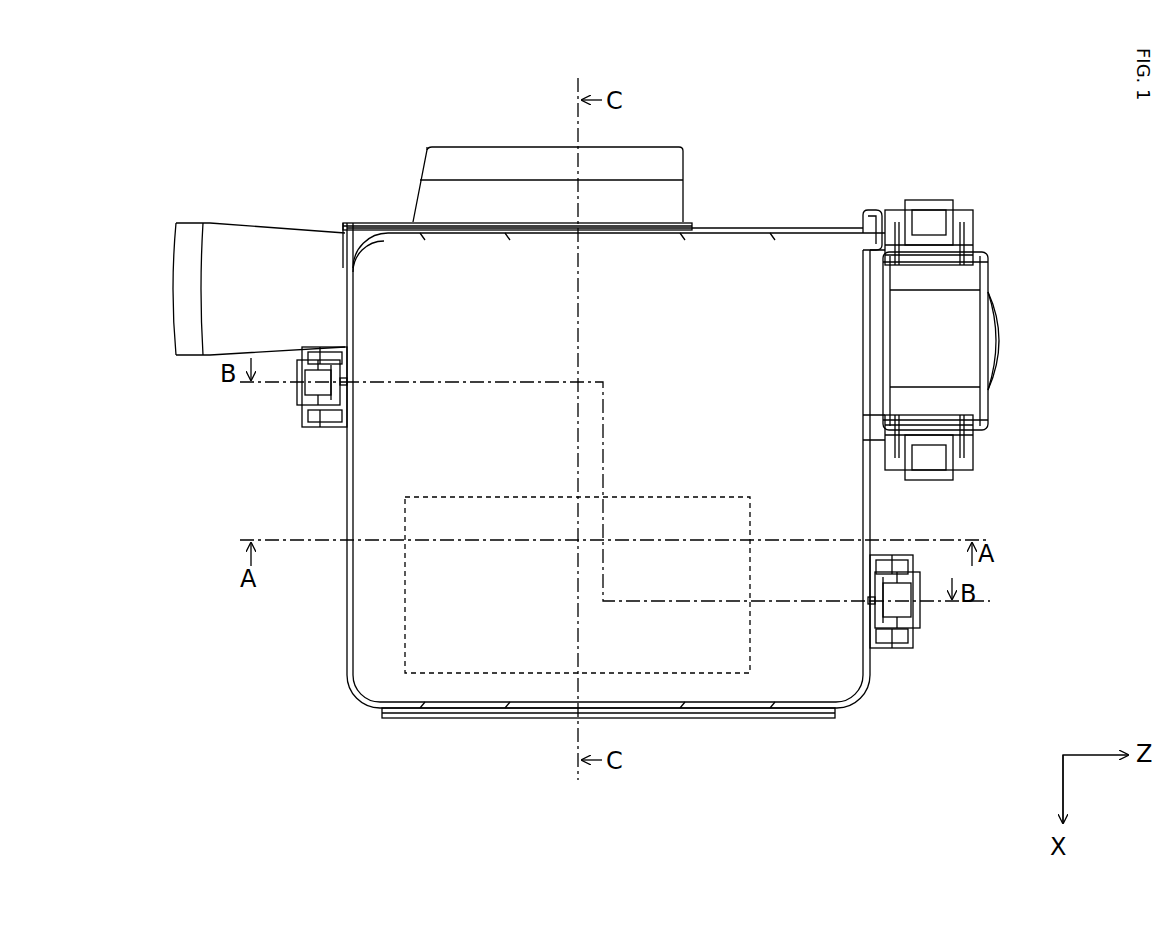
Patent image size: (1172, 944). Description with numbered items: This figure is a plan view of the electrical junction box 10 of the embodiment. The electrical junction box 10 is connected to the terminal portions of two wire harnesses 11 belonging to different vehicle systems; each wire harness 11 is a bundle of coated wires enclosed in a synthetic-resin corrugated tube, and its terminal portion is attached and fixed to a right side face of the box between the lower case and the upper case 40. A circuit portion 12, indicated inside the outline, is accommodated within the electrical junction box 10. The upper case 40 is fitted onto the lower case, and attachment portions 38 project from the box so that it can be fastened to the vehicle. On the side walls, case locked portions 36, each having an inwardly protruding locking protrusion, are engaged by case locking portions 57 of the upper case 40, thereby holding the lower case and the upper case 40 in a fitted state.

The electrical junction box 10 is at (773, 120).
The attachment portion 38 is at (493, 162).
The upper case 40 is at (786, 270).
The wire harness 11 is at (1005, 345).
The case locking portion 57 is at (297, 390).
The case locked portion 36 is at (300, 415).
The circuit portion 12 is at (405, 622).